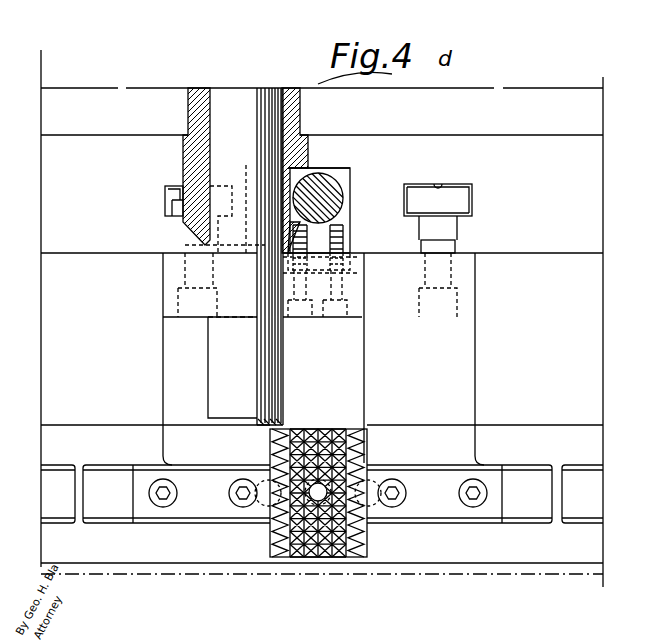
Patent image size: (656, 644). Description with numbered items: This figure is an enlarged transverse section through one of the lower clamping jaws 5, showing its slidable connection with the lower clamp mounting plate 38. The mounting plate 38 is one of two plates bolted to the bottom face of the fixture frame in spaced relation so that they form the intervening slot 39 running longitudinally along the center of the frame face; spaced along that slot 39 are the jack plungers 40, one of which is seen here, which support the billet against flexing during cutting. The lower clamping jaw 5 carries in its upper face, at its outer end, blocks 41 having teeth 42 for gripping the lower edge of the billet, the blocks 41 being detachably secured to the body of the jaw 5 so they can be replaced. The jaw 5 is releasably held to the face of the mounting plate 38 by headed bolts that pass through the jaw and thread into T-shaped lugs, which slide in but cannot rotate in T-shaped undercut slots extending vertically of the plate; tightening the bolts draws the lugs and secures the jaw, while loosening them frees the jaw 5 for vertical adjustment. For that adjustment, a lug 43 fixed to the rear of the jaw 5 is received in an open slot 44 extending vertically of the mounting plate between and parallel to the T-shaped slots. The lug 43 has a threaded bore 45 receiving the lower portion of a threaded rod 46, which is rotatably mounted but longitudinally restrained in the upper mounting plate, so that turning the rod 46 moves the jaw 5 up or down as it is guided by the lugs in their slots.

The lower clamping jaw 5 is at (470, 357).
The lower clamp mounting plate 38 is at (591, 187).
The slot 39 is at (289, 87).
The jack plunger 40 is at (240, 407).
The block 41 is at (305, 435).
The teeth 42 is at (353, 448).
The lug 43 is at (346, 170).
The open slot 44 is at (335, 168).
The threaded bore 45 is at (319, 174).
The threaded rod 46 is at (334, 195).